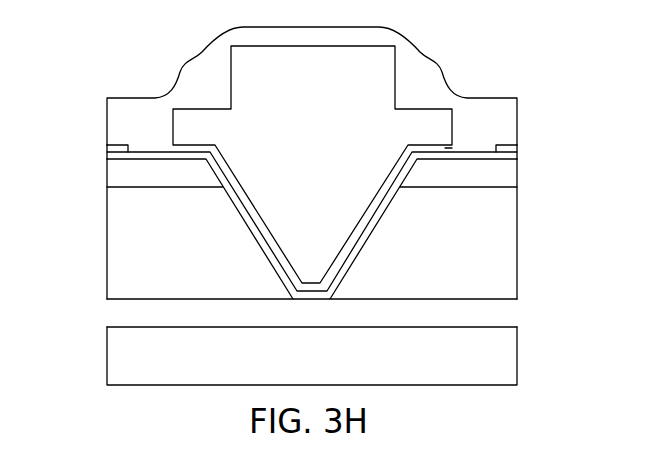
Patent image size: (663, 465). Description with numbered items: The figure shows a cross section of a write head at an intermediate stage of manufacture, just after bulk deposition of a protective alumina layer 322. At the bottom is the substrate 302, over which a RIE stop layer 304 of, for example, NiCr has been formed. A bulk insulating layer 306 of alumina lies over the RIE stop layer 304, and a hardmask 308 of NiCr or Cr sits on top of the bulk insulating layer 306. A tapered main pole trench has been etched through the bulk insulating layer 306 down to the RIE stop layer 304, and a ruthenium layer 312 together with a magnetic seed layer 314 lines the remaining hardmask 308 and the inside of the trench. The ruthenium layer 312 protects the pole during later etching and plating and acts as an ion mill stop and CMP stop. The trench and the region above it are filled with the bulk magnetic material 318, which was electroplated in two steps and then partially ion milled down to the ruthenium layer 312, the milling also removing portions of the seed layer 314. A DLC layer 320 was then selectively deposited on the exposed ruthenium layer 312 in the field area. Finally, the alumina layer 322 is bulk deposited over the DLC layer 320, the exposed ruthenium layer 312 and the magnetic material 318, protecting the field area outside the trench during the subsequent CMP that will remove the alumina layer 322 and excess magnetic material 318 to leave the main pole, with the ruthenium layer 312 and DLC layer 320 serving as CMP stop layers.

The substrate 302 is at (333, 371).
The RIE stop layer 304 is at (479, 322).
The bulk insulating layer 306 is at (178, 256).
The hardmask 308 is at (178, 184).
The ruthenium layer 312 is at (513, 155).
The magnetic seed layer 314 is at (452, 148).
The magnetic material 318 is at (333, 124).
The DLC layer 320 is at (110, 149).
The alumina layer 322 is at (438, 77).